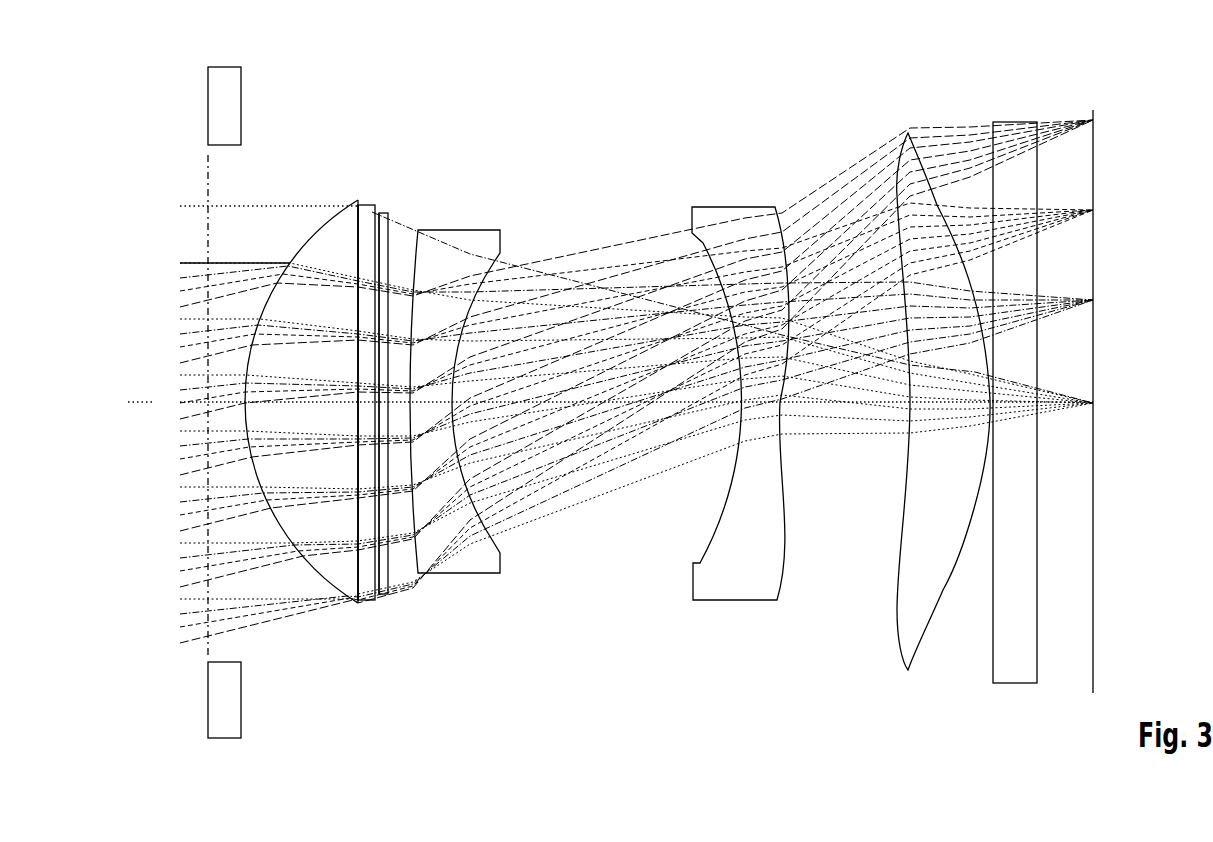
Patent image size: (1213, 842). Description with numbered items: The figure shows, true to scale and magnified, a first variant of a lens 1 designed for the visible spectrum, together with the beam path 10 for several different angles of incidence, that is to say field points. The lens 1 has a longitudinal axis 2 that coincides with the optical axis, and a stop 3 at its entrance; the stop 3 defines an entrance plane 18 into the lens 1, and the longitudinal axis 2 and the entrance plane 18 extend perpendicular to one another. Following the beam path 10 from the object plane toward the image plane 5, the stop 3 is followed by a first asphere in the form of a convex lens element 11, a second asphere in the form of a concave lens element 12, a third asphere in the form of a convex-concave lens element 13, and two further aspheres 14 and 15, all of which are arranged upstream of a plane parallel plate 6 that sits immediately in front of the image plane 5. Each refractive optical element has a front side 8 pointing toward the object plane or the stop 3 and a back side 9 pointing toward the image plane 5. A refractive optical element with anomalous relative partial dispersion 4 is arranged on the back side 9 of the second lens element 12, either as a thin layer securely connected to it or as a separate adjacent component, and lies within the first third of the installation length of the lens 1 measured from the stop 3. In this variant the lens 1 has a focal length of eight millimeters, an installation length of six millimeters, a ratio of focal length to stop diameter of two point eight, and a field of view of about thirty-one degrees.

The lens 1 is at (357, 152).
The longitudinal axis 2 is at (150, 396).
The stop 3 is at (228, 104).
The refractive optical element with anomalous relative partial dispersion 4 is at (383, 598).
The image plane 5 is at (1097, 677).
The plane parallel plate 6 is at (1014, 670).
The front side 8 is at (320, 231).
The back side 9 is at (376, 226).
The beam path 10 is at (613, 249).
The convex lens element 11 is at (337, 574).
The concave lens element 12 is at (363, 603).
The convex-concave lens element 13 is at (460, 573).
The asphere 14 is at (733, 602).
The asphere 15 is at (906, 643).
The entrance plane 18 is at (205, 186).